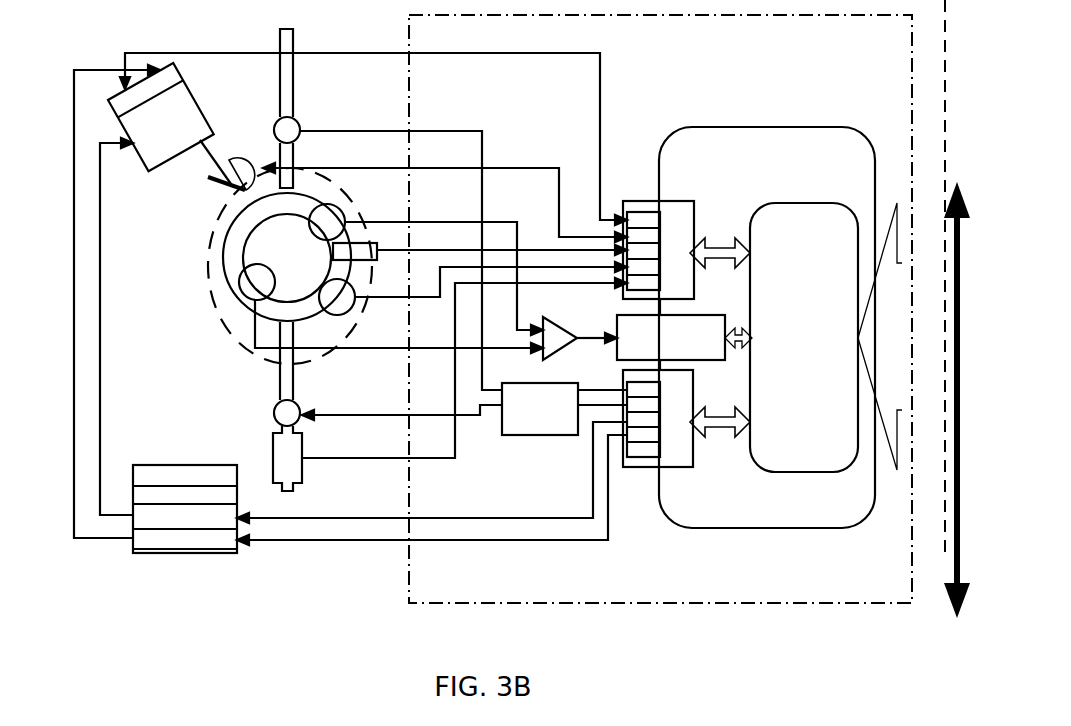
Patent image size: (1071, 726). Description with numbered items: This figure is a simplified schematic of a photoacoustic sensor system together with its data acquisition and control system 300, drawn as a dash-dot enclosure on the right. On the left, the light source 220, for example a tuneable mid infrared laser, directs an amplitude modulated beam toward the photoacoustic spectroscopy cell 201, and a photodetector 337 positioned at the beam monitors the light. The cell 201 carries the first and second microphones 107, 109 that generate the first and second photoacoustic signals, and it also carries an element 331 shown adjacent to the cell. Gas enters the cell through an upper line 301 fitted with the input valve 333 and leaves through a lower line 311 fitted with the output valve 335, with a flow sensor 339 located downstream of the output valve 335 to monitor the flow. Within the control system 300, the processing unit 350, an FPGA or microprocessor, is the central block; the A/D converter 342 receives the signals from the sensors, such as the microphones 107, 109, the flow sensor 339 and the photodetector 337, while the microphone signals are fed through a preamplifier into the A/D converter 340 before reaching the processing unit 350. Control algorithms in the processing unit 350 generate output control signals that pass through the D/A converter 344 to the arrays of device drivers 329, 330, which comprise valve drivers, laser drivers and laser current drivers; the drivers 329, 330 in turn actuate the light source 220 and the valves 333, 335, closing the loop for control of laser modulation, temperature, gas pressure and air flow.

The first microphone 107 is at (215, 295).
The second microphone 109 is at (357, 212).
The photoacoustic spectroscopy cell 201 is at (253, 266).
The light source 220 is at (132, 134).
The data acquisition and control system 300 is at (783, 77).
The inlet tube 301 is at (326, 108).
The outlet tube 311 is at (241, 361).
The array of device drivers 329 is at (173, 535).
The array of device drivers 330 is at (521, 425).
The roller with position sensor 331 is at (378, 279).
The input valve 333 is at (325, 119).
The output valve 335 is at (322, 402).
The photodetector 337 is at (219, 134).
The flow sensor 339 is at (328, 462).
The A/D converter 340 is at (646, 349).
The A/D converter 342 is at (686, 231).
The D/A converter 344 is at (685, 441).
The processing unit 350 is at (783, 345).